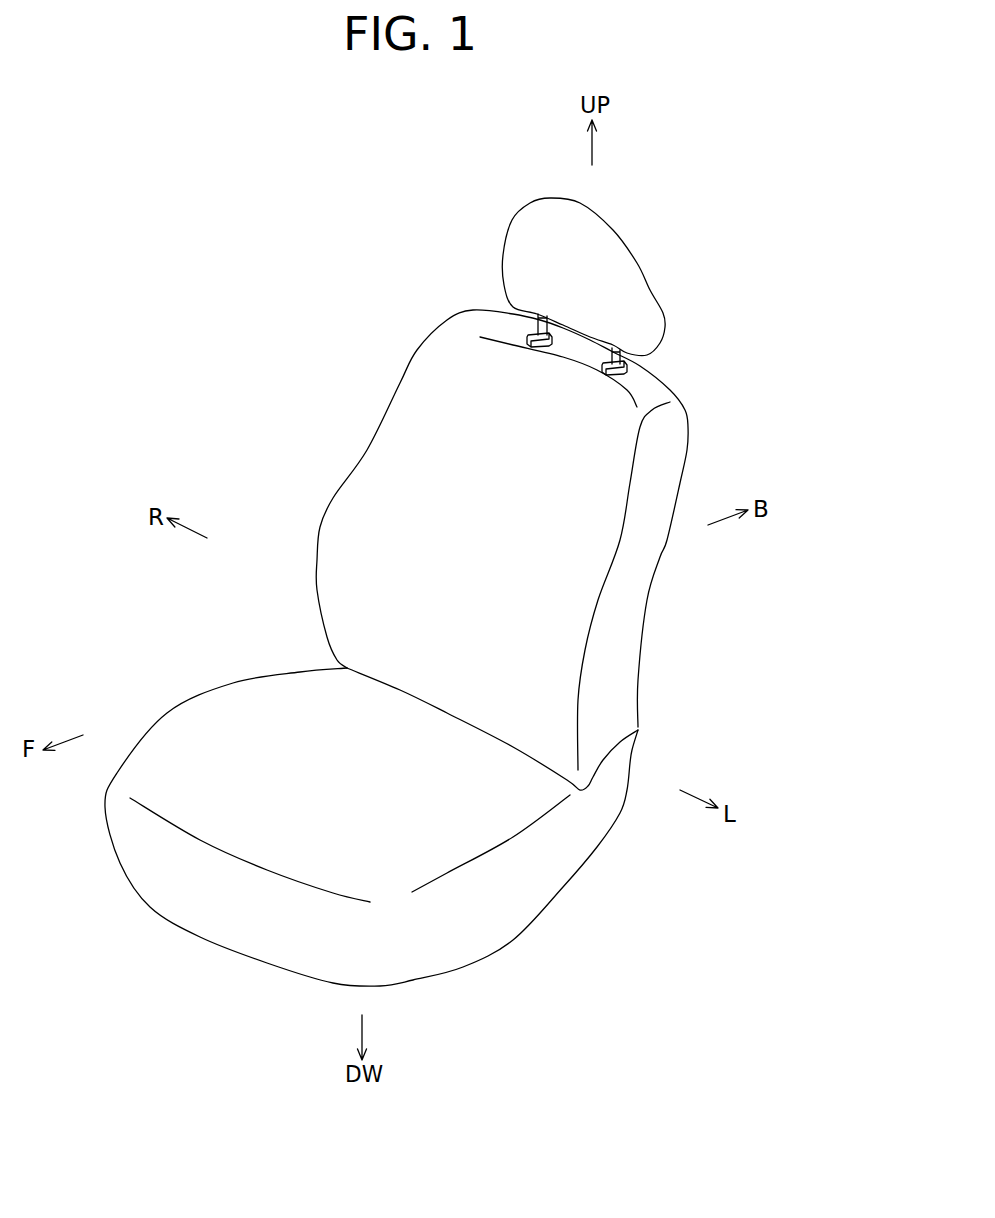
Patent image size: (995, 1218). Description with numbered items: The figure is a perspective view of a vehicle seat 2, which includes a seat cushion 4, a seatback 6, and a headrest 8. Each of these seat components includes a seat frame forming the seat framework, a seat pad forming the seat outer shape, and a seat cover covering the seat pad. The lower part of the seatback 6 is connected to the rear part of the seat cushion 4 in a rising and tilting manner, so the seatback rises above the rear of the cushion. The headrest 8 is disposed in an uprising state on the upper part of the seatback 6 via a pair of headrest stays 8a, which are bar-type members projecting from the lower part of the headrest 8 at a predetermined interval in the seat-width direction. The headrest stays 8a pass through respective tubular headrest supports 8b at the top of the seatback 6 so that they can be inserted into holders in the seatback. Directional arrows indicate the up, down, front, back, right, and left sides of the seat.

The vehicle seat 2 is at (695, 233).
The seat cushion 4 is at (270, 687).
The seatback 6 is at (387, 452).
The headrest 8 is at (527, 246).
The headrest stays 8a is at (507, 317).
The headrest supports 8b is at (528, 337).